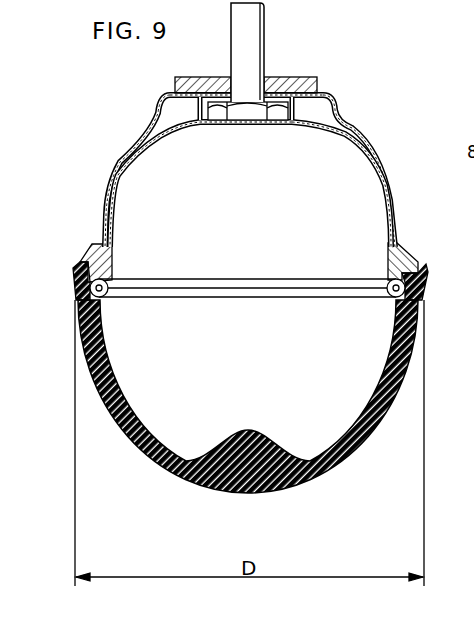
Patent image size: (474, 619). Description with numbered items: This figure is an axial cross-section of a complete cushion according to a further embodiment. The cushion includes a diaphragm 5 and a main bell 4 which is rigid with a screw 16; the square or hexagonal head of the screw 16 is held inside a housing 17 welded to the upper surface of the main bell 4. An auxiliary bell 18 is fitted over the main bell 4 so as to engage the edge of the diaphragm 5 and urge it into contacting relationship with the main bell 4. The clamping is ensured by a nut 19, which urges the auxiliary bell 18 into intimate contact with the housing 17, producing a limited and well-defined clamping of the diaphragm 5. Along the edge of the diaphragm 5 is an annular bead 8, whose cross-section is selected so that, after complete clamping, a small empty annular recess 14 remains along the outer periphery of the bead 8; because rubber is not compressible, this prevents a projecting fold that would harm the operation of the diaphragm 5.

The screw 16 is at (249, 33).
The nut 19 is at (302, 75).
The housing 17 is at (297, 107).
The auxiliary bell 18 is at (362, 130).
The main bell 4 is at (372, 172).
The empty annular recess 14 is at (397, 242).
The annular bead 8 is at (417, 262).
The diaphragm 5 is at (403, 352).